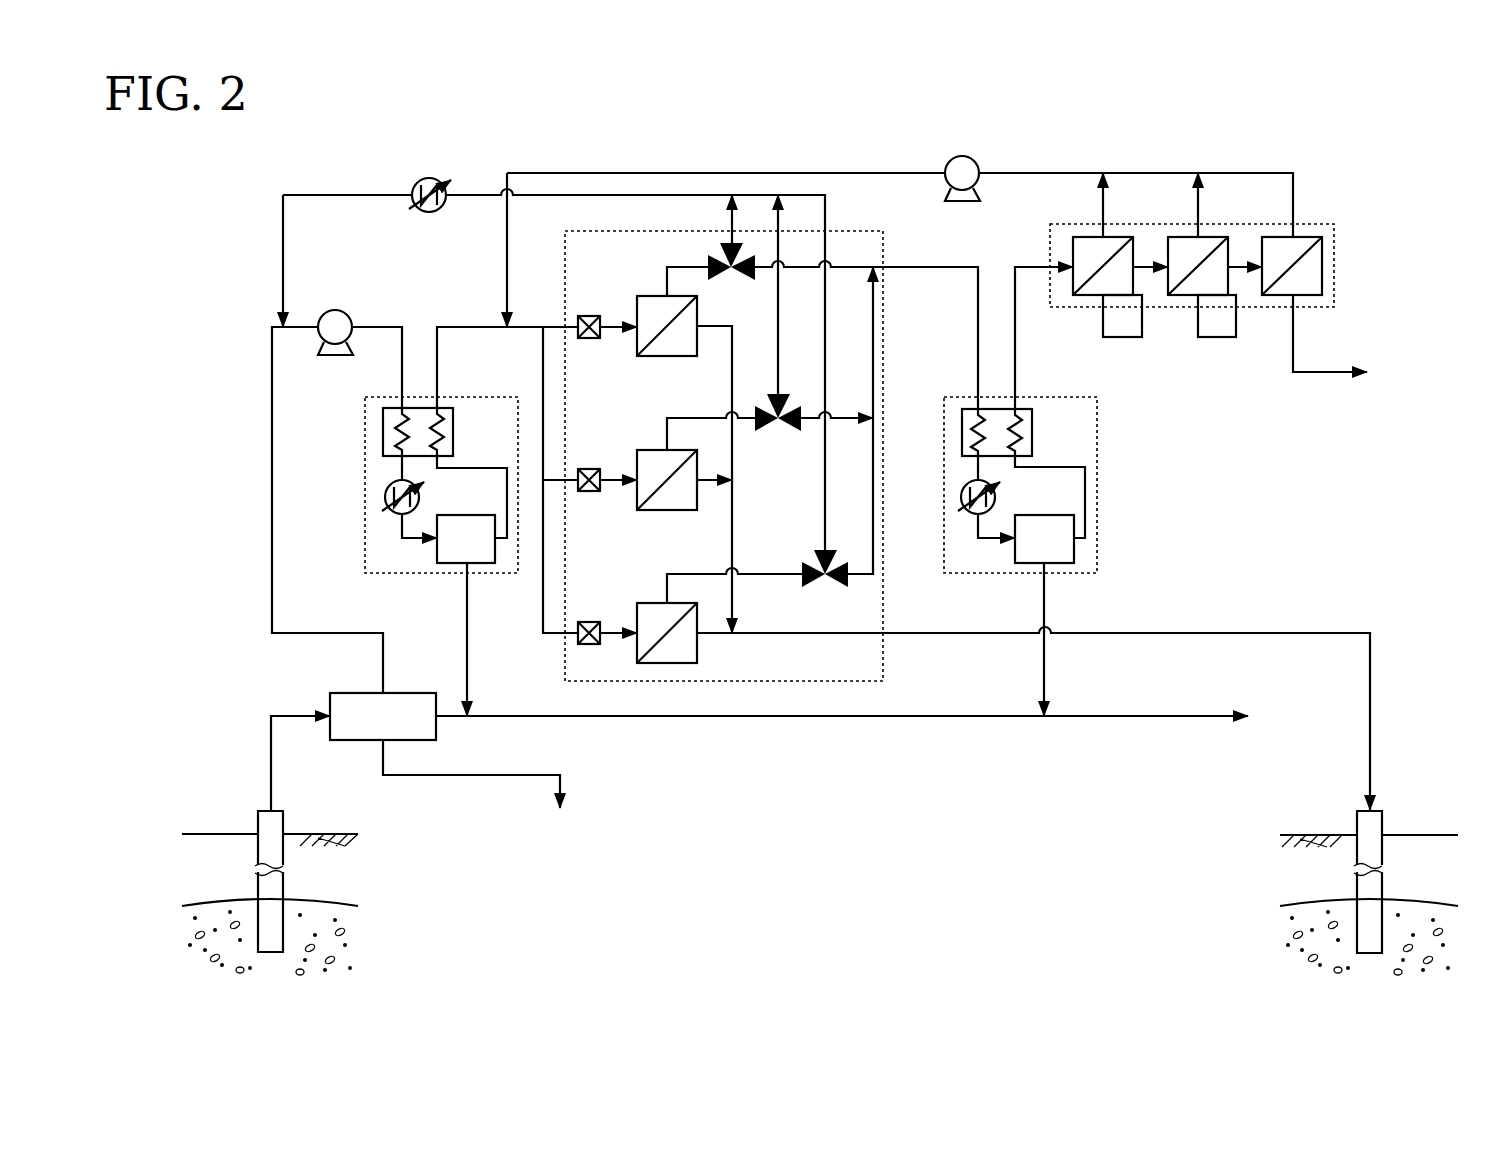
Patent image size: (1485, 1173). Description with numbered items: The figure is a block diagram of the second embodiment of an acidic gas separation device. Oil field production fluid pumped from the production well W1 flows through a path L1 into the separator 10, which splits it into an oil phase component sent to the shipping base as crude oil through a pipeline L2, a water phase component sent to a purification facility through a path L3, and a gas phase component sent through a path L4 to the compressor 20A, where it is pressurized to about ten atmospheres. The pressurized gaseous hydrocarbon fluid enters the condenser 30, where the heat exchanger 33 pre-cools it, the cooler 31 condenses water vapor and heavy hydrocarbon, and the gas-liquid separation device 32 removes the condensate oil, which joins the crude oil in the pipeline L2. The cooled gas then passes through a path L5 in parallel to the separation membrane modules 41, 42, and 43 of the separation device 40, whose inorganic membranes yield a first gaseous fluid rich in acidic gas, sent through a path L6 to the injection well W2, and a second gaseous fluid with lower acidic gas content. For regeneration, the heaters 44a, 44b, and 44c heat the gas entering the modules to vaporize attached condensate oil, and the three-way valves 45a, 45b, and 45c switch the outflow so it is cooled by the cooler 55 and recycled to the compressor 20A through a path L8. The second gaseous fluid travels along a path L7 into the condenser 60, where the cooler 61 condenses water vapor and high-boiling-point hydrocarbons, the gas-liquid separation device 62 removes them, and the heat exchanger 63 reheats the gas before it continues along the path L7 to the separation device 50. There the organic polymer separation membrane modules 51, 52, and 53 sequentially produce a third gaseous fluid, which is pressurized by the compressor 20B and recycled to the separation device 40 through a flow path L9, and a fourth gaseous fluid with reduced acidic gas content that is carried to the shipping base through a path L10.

The separator 10 is at (404, 693).
The compressor 20A is at (340, 311).
The compressor 20B is at (972, 161).
The condenser 30 is at (470, 397).
The cooler 31 is at (382, 497).
The gas-liquid separation device 32 is at (466, 515).
The heat exchanger 33 is at (383, 430).
The separation device 40 is at (841, 232).
The separation membrane module 41 is at (651, 296).
The separation membrane module 42 is at (651, 450).
The separation membrane module 43 is at (651, 603).
The heater 44a is at (589, 316).
The heater 44b is at (589, 469).
The heater 44c is at (592, 616).
The three-way valve 45a is at (734, 280).
The three-way valve 45b is at (780, 433).
The three-way valve 45c is at (828, 588).
The separation device 50 is at (1336, 254).
The separation membrane module 51 is at (1115, 237).
The separation membrane module 52 is at (1208, 237).
The separation membrane module 53 is at (1300, 237).
The cooler 55 is at (432, 186).
The condenser 60 is at (1050, 397).
The cooler 61 is at (960, 497).
The gas-liquid separation device 62 is at (1044, 515).
The heat exchanger 63 is at (962, 430).
The path L1 is at (271, 777).
The pipeline L2 is at (720, 716).
The path L3 is at (470, 775).
The path L4 is at (272, 516).
The path L5 is at (458, 327).
The path L6 is at (1193, 633).
The path L7 is at (903, 267).
The path L8 is at (345, 195).
The flow path L9 is at (680, 173).
The path L10 is at (1293, 357).
The production well W1 is at (214, 880).
The injection well W2 is at (1459, 880).